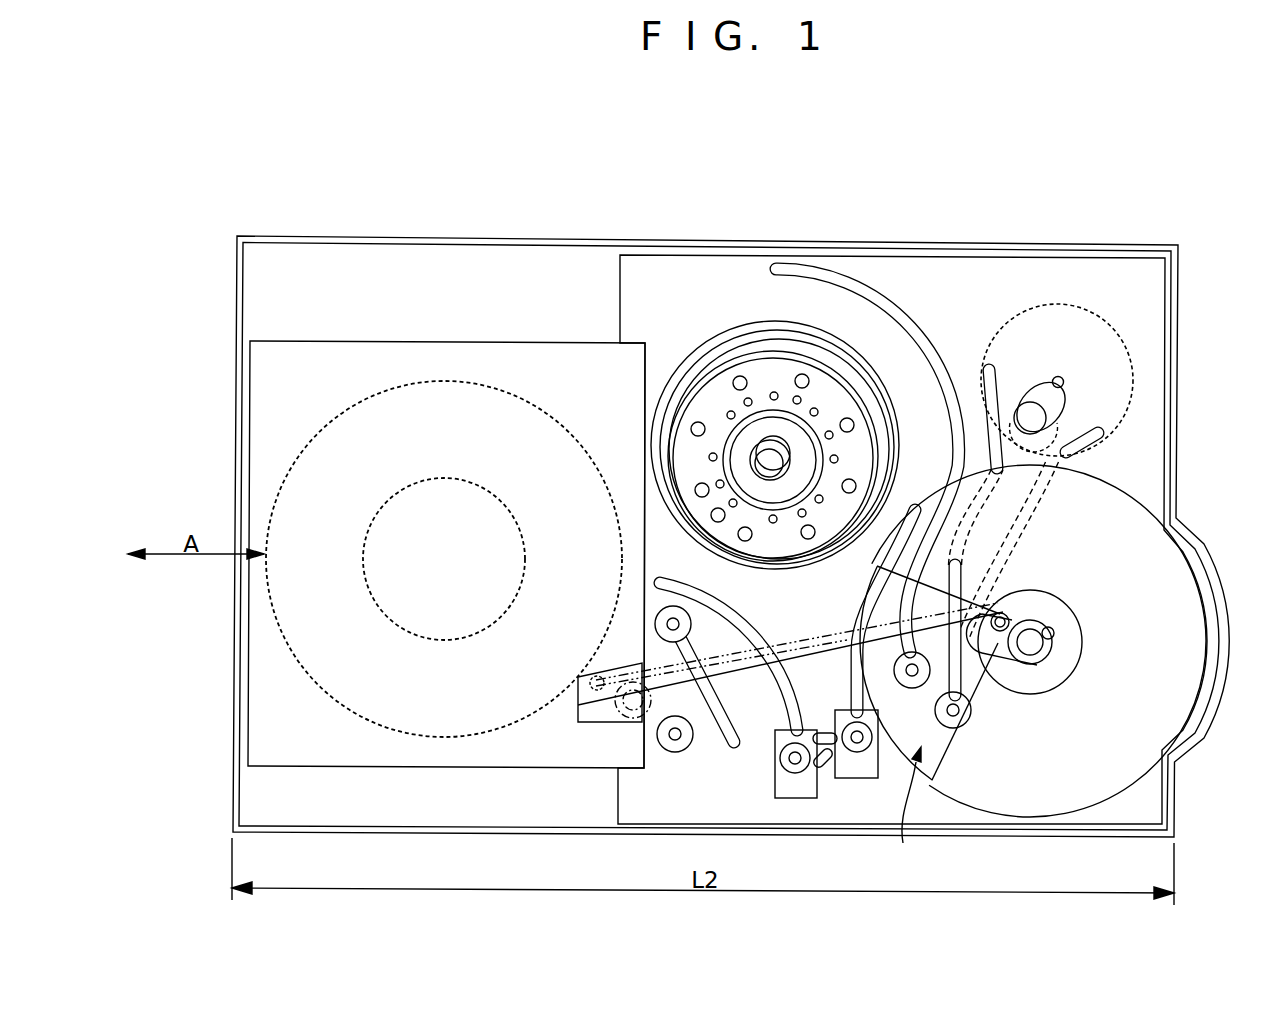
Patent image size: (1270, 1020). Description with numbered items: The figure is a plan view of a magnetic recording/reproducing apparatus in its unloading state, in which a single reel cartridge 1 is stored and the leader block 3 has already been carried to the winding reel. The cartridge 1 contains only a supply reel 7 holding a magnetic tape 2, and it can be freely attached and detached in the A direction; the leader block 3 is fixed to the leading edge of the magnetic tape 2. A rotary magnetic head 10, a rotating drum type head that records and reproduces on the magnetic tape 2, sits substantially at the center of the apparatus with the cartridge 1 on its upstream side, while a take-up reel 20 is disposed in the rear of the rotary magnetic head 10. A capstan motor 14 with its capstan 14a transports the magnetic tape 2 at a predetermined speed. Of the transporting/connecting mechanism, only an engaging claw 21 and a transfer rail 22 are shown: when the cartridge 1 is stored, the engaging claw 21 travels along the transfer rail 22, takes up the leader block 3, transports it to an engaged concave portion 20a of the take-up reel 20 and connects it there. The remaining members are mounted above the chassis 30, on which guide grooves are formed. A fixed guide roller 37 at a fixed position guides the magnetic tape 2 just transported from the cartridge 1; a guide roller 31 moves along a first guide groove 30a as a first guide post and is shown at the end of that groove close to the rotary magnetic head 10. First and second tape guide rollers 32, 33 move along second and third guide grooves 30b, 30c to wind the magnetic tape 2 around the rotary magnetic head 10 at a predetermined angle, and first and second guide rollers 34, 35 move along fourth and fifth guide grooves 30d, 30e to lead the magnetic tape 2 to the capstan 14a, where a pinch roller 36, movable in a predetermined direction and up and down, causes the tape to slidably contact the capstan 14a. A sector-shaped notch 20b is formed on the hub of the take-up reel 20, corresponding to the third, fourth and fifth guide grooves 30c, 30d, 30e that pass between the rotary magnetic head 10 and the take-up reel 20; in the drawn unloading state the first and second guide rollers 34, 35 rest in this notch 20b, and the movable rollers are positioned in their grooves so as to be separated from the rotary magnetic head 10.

The single reel cartridge 1 is at (473, 342).
The magnetic tape 2 is at (841, 652).
The leader block 3 is at (997, 644).
The supply reel 7 is at (350, 403).
The rotary magnetic head 10 is at (710, 348).
The capstan motor 14 is at (1061, 302).
The capstan 14a is at (1062, 377).
The take-up reel 20 is at (1122, 487).
The engaged concave portion 20a is at (1055, 641).
The notch 20b is at (901, 808).
The engaging claw 21 is at (1003, 613).
The transfer rail 22 is at (840, 625).
The chassis 30 is at (712, 273).
The first guide groove 30a is at (718, 728).
The second guide groove 30b is at (683, 590).
The third guide groove 30c is at (843, 268).
The fourth guide groove 30d is at (989, 365).
The fifth guide groove 30e is at (1105, 430).
The guide roller 31 is at (652, 603).
The first tape guide roller 32 is at (788, 800).
The second tape guide roller 33 is at (857, 780).
The first guide roller 34 is at (912, 689).
The second guide roller 35 is at (957, 730).
The pinch roller 36 is at (1030, 413).
The fixed guide roller 37 is at (673, 754).